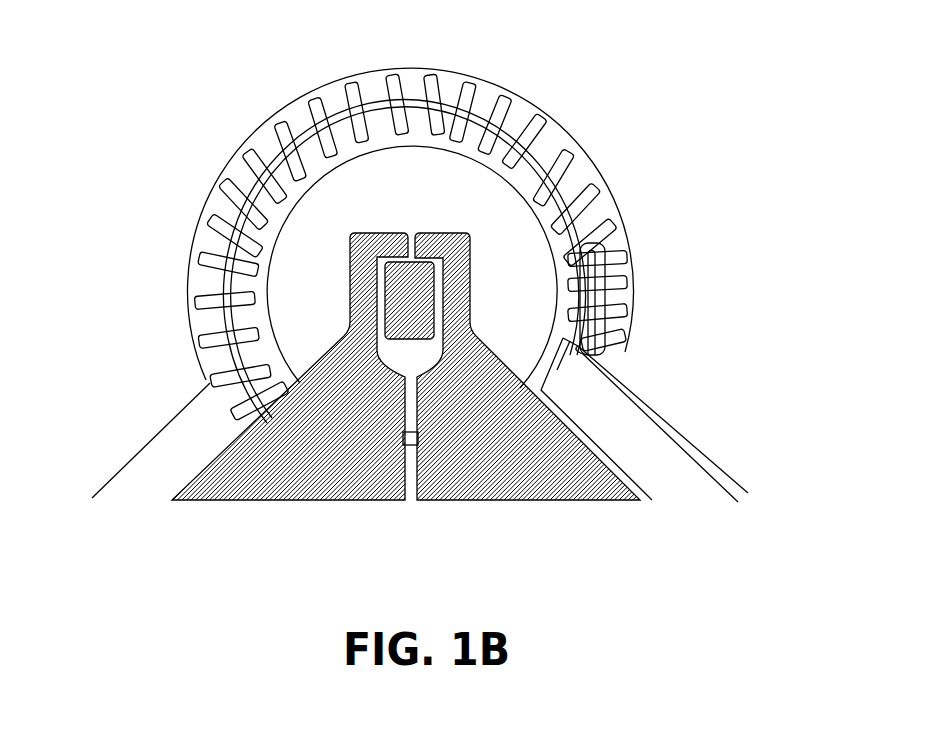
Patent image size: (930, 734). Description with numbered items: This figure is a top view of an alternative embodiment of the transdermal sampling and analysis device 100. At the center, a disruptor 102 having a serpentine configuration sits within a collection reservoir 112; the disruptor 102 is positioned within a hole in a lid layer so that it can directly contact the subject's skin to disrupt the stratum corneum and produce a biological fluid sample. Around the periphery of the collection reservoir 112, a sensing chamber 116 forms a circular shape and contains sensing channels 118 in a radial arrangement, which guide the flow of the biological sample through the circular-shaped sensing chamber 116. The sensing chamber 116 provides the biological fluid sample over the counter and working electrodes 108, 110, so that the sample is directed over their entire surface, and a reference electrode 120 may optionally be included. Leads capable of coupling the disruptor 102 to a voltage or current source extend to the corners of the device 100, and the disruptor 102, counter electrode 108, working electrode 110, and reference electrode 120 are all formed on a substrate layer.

The transdermal sampling and analysis device 100 is at (676, 88).
The disruptor 102 is at (290, 502).
The counter electrode 108 is at (138, 493).
The working electrode 110 is at (658, 465).
The collection reservoir 112 is at (423, 209).
The sensing chamber 116 is at (630, 272).
The sensing channels 118 is at (236, 263).
The reference electrode 120 is at (679, 422).